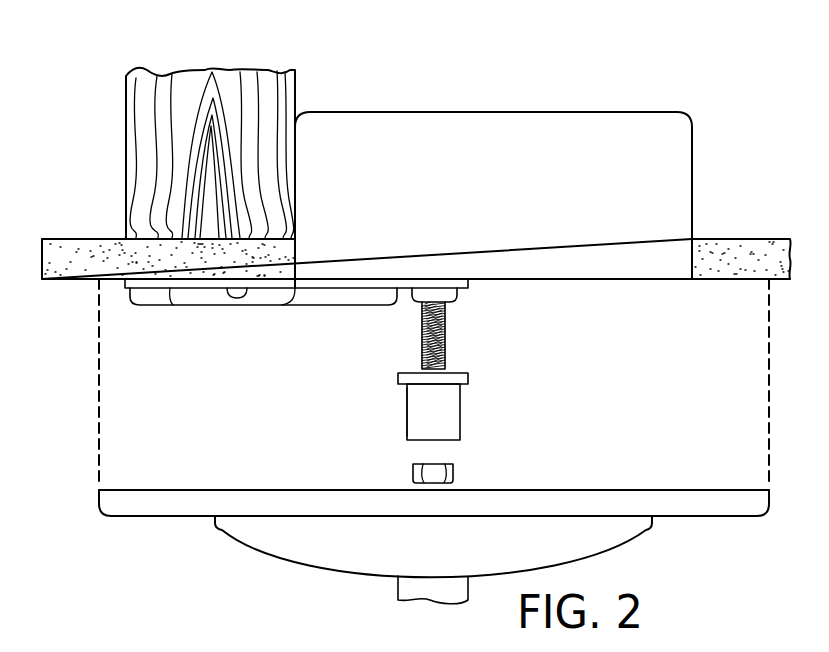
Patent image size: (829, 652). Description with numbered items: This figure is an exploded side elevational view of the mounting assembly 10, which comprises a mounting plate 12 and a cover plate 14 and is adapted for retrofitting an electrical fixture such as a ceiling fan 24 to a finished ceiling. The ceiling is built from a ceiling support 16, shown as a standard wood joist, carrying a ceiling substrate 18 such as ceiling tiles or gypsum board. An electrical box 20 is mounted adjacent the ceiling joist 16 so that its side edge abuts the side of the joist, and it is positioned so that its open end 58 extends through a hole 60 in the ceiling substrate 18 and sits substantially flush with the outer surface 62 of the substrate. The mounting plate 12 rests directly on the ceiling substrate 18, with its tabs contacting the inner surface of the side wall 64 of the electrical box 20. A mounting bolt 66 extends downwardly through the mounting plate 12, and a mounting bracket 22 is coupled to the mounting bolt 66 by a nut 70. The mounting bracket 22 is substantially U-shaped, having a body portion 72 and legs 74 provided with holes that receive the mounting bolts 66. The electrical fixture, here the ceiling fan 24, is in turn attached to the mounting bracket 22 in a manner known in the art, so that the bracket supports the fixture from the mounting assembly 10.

The mounting assembly 10 is at (121, 392).
The mounting plate 12 is at (234, 477).
The cover plate 14 is at (326, 318).
The ceiling support 16 is at (296, 92).
The ceiling substrate 18 is at (726, 230).
The electrical box 20 is at (508, 202).
The mounting bracket 22 is at (446, 412).
The ceiling fan 24 is at (267, 562).
The open end 58 is at (603, 292).
The hole 60 is at (690, 281).
The outer surface 62 is at (735, 281).
The side wall 64 is at (296, 194).
The mounting bolt 66 is at (445, 338).
The nut 70 is at (453, 470).
The body portion 72 is at (418, 422).
The leg 74 is at (468, 379).